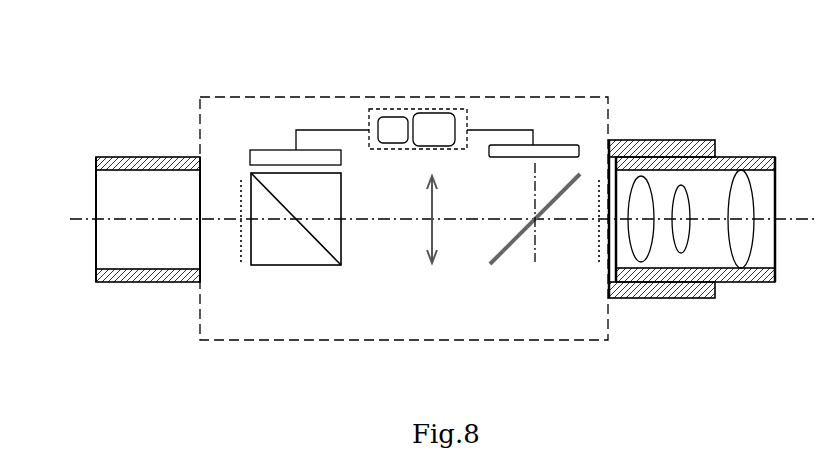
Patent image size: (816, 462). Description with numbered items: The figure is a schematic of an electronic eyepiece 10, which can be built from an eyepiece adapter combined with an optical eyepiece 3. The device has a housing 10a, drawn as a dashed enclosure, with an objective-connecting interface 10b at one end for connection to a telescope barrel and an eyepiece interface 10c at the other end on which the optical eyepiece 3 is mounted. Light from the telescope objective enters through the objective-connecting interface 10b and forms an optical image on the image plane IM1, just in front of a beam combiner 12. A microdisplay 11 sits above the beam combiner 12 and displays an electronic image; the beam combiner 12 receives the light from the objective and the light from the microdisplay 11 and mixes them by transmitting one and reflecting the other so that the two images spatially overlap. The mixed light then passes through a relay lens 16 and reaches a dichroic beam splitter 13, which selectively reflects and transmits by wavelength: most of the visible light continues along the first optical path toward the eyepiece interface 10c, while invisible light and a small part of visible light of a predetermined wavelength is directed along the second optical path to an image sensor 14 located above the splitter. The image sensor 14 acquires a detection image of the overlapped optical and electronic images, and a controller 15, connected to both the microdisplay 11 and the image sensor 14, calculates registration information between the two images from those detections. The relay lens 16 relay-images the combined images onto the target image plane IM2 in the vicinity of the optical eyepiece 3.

The electronic eyepiece 10 is at (166, 78).
The housing 10a is at (345, 97).
The objective-connecting interface 10b is at (148, 157).
The eyepiece interface 10c is at (668, 140).
The microdisplay 11 is at (264, 150).
The beam combiner 12 is at (313, 266).
The dichroic beam splitter 13 is at (508, 250).
The image sensor 14 is at (557, 145).
The controller 15 is at (420, 110).
The relay lens 16 is at (427, 256).
The image plane IM1 is at (226, 252).
The target image plane IM2 is at (612, 252).
The optical eyepiece 3 is at (738, 283).